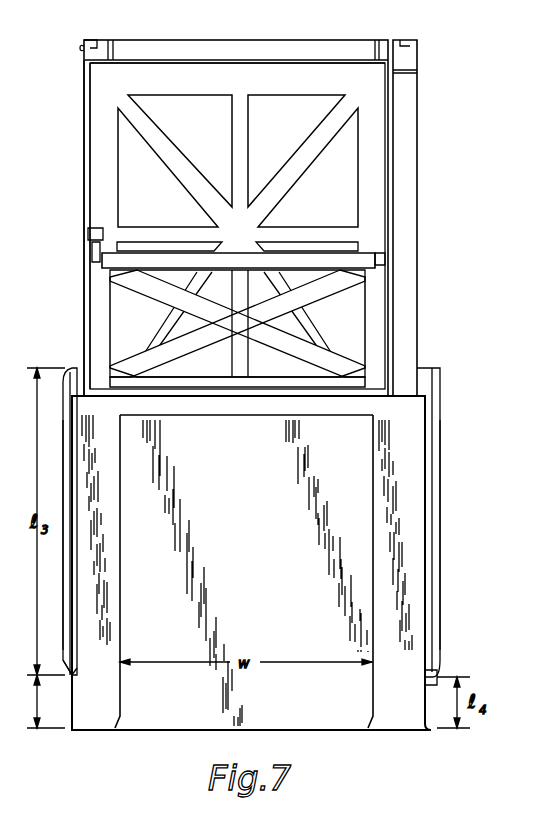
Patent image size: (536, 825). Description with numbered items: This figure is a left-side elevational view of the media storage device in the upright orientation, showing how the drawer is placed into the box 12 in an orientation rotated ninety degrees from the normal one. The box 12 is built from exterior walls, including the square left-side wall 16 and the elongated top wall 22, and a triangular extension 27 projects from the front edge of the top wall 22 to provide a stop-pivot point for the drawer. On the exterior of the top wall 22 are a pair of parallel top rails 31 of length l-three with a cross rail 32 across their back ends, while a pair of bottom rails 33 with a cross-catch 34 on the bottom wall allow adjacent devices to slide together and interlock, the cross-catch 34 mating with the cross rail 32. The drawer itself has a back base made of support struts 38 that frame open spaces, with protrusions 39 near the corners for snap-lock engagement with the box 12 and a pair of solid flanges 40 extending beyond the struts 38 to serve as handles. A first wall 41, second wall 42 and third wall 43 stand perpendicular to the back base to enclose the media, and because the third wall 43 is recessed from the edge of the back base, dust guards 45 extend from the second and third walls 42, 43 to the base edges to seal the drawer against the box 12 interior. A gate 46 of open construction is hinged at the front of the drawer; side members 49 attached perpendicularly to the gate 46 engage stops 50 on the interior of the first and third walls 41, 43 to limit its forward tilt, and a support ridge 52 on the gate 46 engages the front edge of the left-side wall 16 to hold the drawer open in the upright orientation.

The box 12 is at (454, 507).
The left-side wall 16 is at (268, 540).
The top wall 22 is at (428, 736).
The triangular extension 27 is at (72, 368).
The top rails 31 is at (62, 588).
The cross rail 32 is at (64, 660).
The bottom rails 33 is at (441, 574).
The cross-catch 34 is at (434, 672).
The support struts 38 is at (250, 147).
The protrusions 39 is at (80, 47).
The flanges 40 is at (276, 44).
The first wall 41 is at (84, 205).
The second wall 42 is at (203, 63).
The third wall 43 is at (395, 192).
The dust guards 45 is at (376, 44).
The gate 46 is at (240, 262).
The side members 49 is at (94, 263).
The stops 50 is at (88, 235).
The support ridge 52 is at (215, 388).